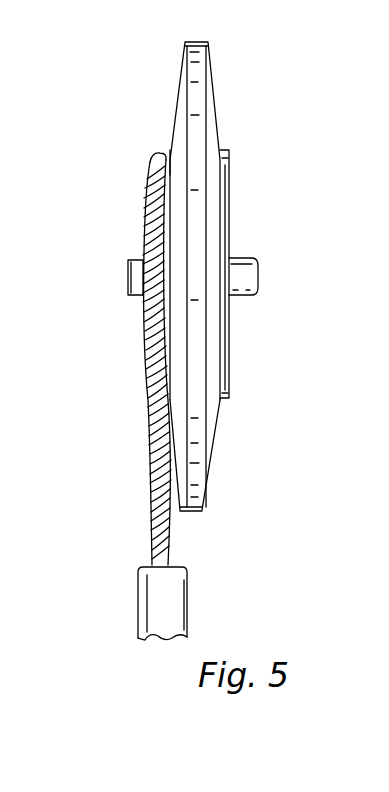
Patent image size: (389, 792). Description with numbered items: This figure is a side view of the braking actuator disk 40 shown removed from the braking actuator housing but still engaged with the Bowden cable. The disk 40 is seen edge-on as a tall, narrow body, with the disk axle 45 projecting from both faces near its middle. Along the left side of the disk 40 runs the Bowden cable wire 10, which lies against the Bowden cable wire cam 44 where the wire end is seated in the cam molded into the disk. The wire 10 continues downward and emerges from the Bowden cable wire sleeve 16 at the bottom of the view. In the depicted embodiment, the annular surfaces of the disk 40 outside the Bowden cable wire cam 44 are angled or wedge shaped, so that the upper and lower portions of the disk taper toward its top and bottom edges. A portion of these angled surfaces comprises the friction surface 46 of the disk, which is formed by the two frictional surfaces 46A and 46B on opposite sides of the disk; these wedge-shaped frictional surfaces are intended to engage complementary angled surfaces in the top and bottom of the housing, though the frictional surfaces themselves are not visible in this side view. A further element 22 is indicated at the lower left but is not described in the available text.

The Bowden cable wire 10 is at (143, 353).
The Bowden cable wire sleeve 16 is at (138, 590).
The frame member 22 is at (0, 717).
The disk 40 is at (256, 106).
The Bowden cable wire cam 44 is at (170, 148).
The disk axle 45 is at (240, 258).
The friction surface 46 is at (177, 92).
The frictional surface 46A is at (177, 465).
The frictional surface 46B is at (212, 452).